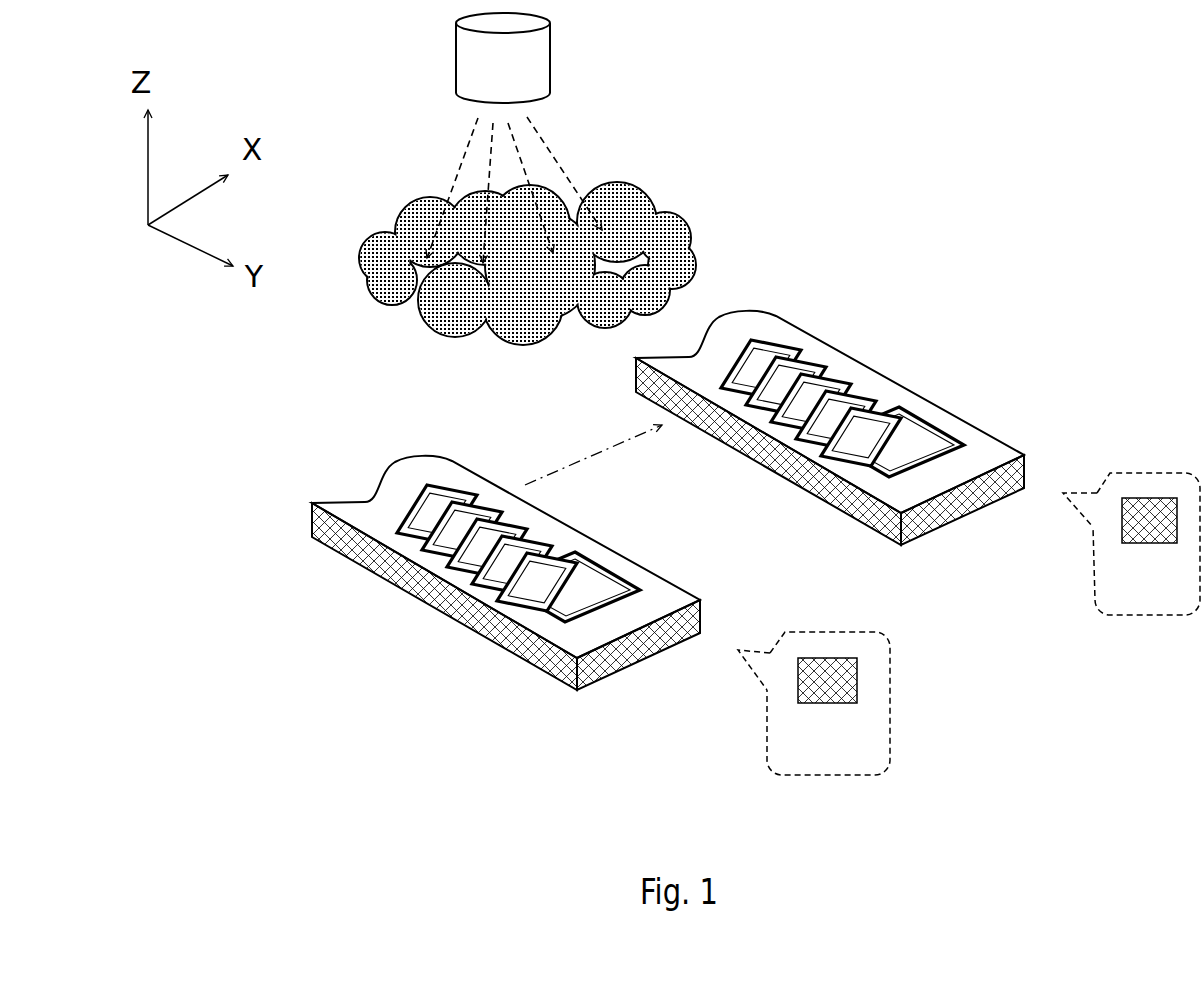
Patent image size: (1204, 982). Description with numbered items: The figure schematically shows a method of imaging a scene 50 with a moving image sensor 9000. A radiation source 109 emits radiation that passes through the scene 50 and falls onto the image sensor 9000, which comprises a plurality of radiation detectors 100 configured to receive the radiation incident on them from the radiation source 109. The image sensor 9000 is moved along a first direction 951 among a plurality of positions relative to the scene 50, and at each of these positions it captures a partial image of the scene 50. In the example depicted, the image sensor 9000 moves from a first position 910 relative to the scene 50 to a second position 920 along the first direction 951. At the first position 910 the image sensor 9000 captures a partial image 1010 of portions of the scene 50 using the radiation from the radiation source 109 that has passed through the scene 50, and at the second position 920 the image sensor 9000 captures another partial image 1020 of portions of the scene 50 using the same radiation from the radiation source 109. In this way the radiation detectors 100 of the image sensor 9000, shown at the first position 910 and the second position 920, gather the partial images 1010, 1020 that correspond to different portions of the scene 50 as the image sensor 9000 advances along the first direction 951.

The radiation source 109 is at (503, 58).
The scene 50 is at (527, 231).
The image sensor 9000 is at (300, 496).
The radiation detectors 100 is at (438, 561).
The first direction 951 is at (593, 465).
The first position 910 is at (506, 587).
The second position 920 is at (830, 444).
The partial image 1010 is at (814, 703).
The another partial image 1020 is at (1131, 544).